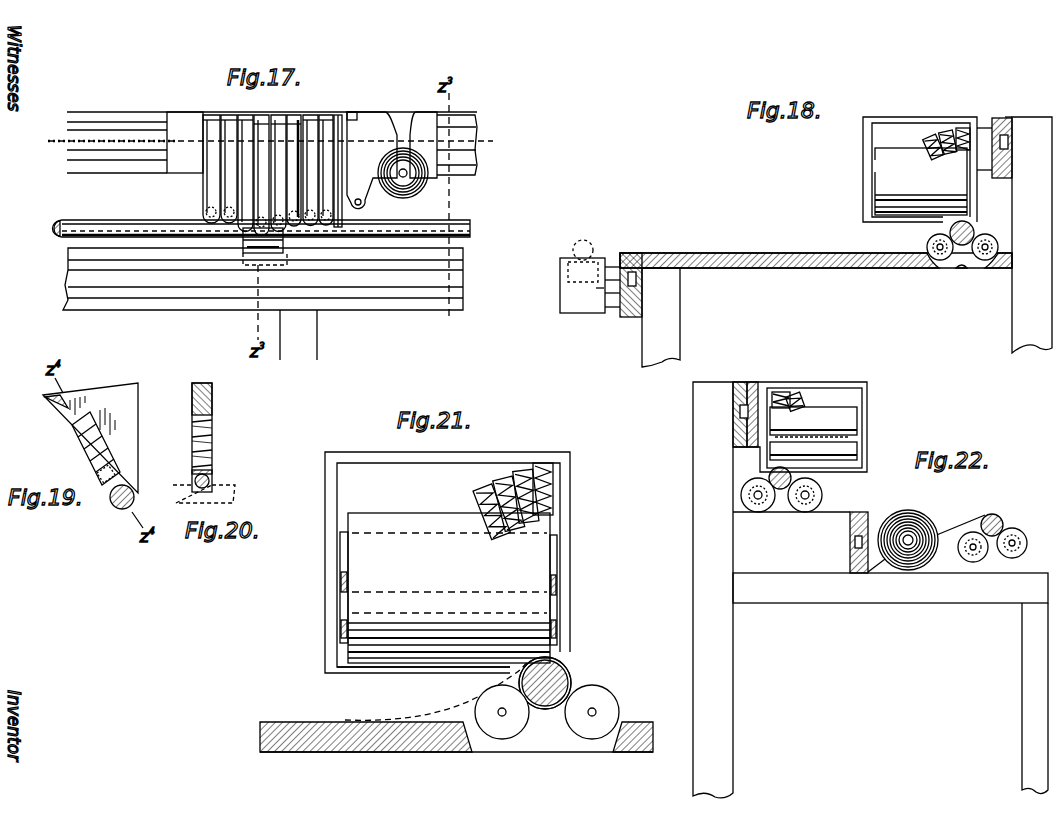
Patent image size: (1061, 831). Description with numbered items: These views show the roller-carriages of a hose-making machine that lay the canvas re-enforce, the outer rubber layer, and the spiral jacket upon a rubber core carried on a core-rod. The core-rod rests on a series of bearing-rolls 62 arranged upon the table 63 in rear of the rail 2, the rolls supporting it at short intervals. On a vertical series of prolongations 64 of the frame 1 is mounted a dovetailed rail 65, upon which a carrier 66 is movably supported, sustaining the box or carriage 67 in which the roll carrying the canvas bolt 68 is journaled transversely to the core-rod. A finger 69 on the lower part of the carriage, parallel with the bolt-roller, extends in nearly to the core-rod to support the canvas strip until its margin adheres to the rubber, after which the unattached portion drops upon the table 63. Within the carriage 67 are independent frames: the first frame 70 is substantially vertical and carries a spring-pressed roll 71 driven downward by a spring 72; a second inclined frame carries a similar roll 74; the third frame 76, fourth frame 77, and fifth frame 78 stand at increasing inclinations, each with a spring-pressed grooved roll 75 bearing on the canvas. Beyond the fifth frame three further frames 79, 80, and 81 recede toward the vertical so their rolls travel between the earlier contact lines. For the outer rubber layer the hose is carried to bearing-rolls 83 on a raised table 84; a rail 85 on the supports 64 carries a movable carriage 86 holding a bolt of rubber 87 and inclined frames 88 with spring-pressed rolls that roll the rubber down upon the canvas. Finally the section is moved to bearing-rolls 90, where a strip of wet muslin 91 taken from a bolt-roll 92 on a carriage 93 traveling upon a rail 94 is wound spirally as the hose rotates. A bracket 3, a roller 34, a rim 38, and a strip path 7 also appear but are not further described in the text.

In FIG. 18, the frame 1 is at (661, 317).
In FIG. 17, the rail 2 is at (264, 304).
In FIG. 18, the rail 2 is at (590, 276).
In FIG. 18, the bracket 3 is at (583, 310).
In FIG. 21, the strip path 7 is at (590, 690).
In FIG. 18, the feed roller 34 is at (972, 228).
In FIG. 19, the feed roller 34 is at (113, 505).
In FIG. 22, the feed roller 34 is at (1015, 515).
In FIG. 21, the roller rim 38 is at (565, 683).
In FIG. 17, the bearing-rolls 62 is at (247, 253).
In FIG. 18, the bearing-rolls 62 is at (927, 247).
In FIG. 21, the bearing-rolls 62 is at (606, 697).
In FIG. 17, the table 63 is at (262, 228).
In FIG. 18, the table 63 is at (783, 260).
In FIG. 21, the table 63 is at (456, 729).
In FIG. 18, the prolongations of the frame 64 is at (1032, 235).
In FIG. 17, the dovetailed rail 65 is at (477, 128).
In FIG. 18, the dovetailed rail 65 is at (1008, 116).
In FIG. 17, the carrier 66 is at (302, 160).
In FIG. 18, the carrier 66 is at (992, 120).
In FIG. 21, the box or carriage 67 is at (447, 562).
In FIG. 17, the canvas bolt 68 is at (408, 182).
In FIG. 18, the canvas bolt 68 is at (921, 181).
In FIG. 21, the canvas bolt 68 is at (585, 648).
In FIG. 18, the finger 69 is at (900, 220).
In FIG. 21, the finger 69 is at (420, 668).
In FIG. 17, the first frame 70 is at (330, 171).
In FIG. 21, the first frame 70 is at (556, 487).
In FIG. 17, the spring-pressed roll 71 is at (326, 170).
In FIG. 21, the spring 72 is at (555, 505).
In FIG. 17, the second roll 74 is at (310, 170).
In FIG. 17, the spring-pressed grooved roll 75 is at (275, 210).
In FIG. 18, the spring-pressed grooved roll 75 is at (946, 127).
In FIG. 19, the spring-pressed grooved roll 75 is at (114, 477).
In FIG. 20, the spring-pressed grooved roll 75 is at (213, 480).
In FIG. 17, the third frame 76 is at (294, 170).
In FIG. 17, the fourth frame 77 is at (278, 173).
In FIG. 17, the fifth frame 78 is at (261, 175).
In FIG. 19, the fifth frame 78 is at (128, 422).
In FIG. 20, the fifth frame 78 is at (213, 407).
In FIG. 21, the fifth frame 78 is at (490, 504).
In FIG. 17, the frame 79 is at (245, 173).
In FIG. 17, the frame 80 is at (228, 169).
In FIG. 17, the frame 81 is at (211, 169).
In FIG. 22, the bearing-rolls 83 is at (813, 492).
In FIG. 22, the raised table 84 is at (890, 683).
In FIG. 22, the rail 85 is at (742, 382).
In FIG. 22, the movable carriage 86 is at (751, 383).
In FIG. 22, the bolt of rubber 87 is at (793, 466).
In FIG. 22, the inclined frames 88 is at (797, 397).
In FIG. 22, the bearing-rolls 90 is at (1027, 552).
In FIG. 22, the strip of wet muslin 91 is at (957, 540).
In FIG. 22, the bolt-roll 92 is at (910, 537).
In FIG. 22, the carriage 93 is at (866, 513).
In FIG. 22, the rail 94 is at (857, 533).